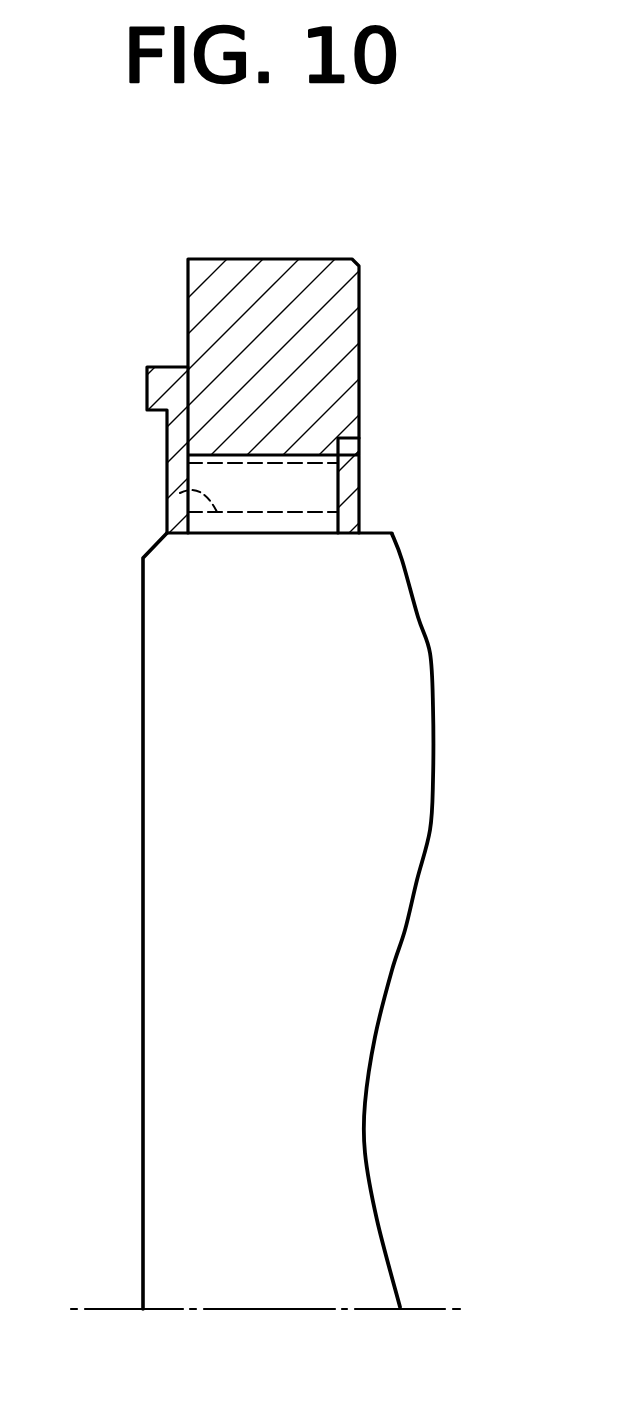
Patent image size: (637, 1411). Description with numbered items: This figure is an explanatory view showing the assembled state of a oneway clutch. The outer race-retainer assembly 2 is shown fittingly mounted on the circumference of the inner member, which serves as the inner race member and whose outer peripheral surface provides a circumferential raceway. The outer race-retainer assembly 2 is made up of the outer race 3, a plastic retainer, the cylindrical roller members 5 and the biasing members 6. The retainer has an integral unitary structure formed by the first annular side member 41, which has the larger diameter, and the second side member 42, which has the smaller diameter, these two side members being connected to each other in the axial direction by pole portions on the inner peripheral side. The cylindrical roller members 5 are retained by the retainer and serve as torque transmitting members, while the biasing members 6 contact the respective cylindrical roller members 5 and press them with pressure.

The outer race-retainer assembly 2 is at (413, 710).
The outer race 3 is at (187, 300).
The first annular side member 41 is at (168, 432).
The second side member 42 is at (350, 459).
The cylindrical roller members 5 is at (313, 485).
The biasing members 6 is at (180, 493).